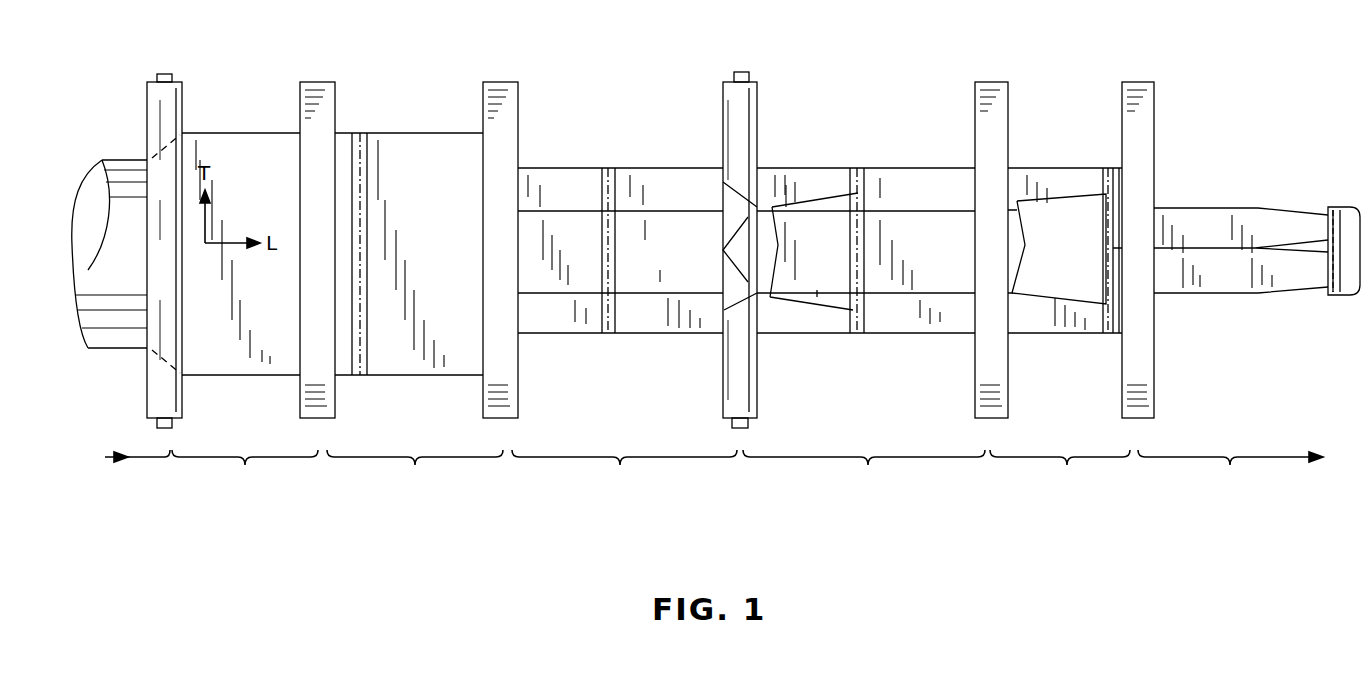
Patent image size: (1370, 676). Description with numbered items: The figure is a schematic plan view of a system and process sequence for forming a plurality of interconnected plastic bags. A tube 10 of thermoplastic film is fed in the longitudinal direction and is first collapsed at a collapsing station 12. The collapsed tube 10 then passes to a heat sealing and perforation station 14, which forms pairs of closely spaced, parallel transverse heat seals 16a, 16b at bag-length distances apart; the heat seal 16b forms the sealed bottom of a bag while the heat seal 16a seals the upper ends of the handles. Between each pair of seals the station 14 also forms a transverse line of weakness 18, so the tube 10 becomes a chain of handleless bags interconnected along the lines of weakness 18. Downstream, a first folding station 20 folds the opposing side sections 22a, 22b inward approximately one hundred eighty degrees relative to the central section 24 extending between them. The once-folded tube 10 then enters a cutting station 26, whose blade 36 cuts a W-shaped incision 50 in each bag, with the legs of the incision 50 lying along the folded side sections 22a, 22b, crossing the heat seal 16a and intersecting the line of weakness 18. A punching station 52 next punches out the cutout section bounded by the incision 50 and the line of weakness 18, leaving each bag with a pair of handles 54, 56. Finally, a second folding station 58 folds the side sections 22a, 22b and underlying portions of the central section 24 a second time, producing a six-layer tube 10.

The tube 10 is at (116, 160).
The collapsing station 12 is at (182, 94).
The heat sealing and perforation station 14 is at (325, 94).
The heat seal 16a is at (356, 137).
The heat seal 16b is at (370, 140).
The transverse line of weakness 18 is at (368, 375).
The first folding station 20 is at (510, 94).
The side section 22a is at (663, 185).
The side section 22b is at (659, 318).
The central section 24 is at (672, 262).
The cutting station 26 is at (741, 76).
The blade 36 is at (726, 177).
The W-shaped incision 50 is at (800, 313).
The punching station 52 is at (995, 94).
The handle 54 is at (1070, 174).
The handle 56 is at (1045, 325).
The second folding station 58 is at (1143, 94).